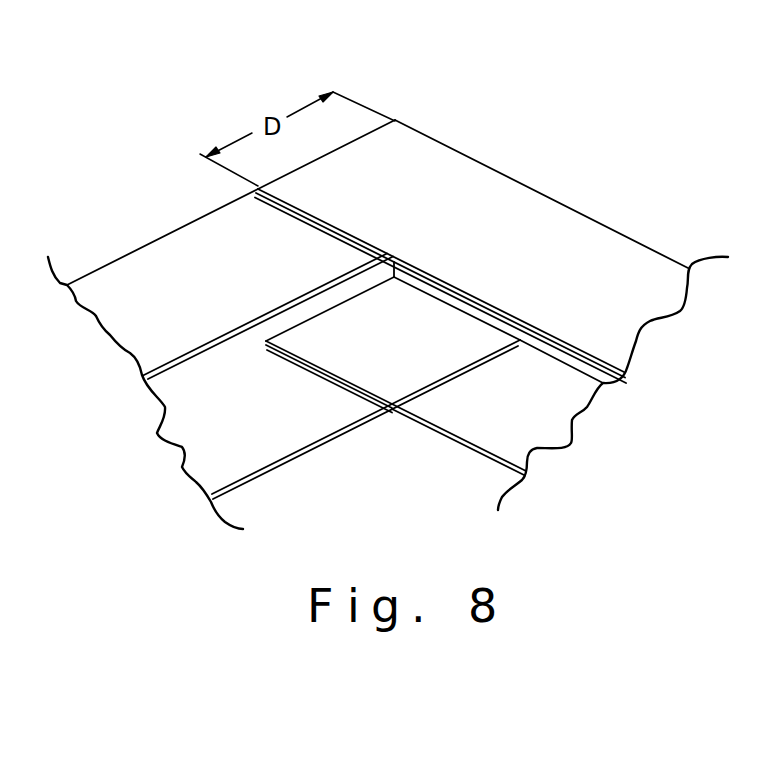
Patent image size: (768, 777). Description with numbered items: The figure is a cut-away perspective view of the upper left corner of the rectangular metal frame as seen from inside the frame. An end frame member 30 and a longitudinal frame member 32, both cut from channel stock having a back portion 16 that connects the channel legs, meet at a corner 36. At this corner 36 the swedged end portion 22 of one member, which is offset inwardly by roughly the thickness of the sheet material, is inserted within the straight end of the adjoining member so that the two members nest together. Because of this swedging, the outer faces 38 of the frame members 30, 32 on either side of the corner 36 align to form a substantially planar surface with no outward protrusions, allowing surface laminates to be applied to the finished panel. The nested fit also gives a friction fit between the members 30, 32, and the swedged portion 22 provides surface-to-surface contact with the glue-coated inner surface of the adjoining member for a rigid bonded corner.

The back portion 16 is at (557, 350).
The swedged end portion 22 is at (440, 388).
The end frame member 30 is at (563, 202).
The longitudinal frame member 32 is at (147, 244).
The corner 36 is at (396, 121).
The outer face 38 is at (217, 237).